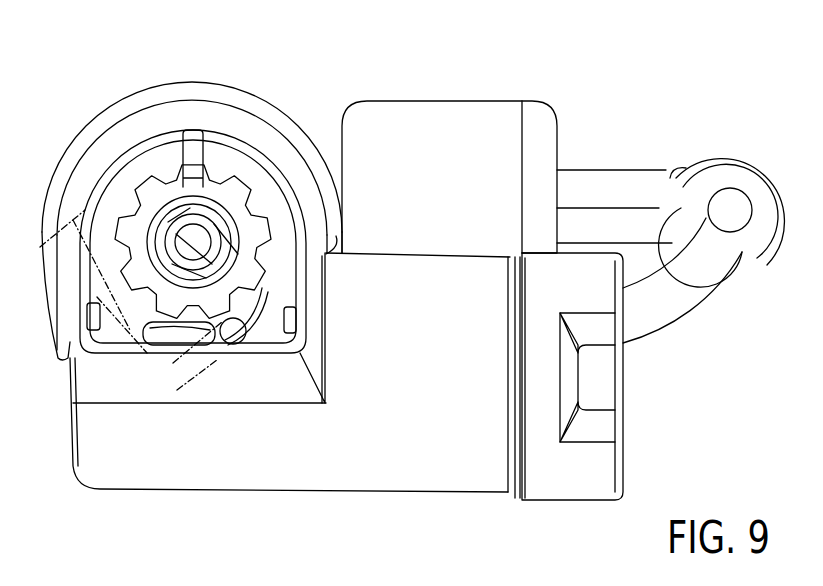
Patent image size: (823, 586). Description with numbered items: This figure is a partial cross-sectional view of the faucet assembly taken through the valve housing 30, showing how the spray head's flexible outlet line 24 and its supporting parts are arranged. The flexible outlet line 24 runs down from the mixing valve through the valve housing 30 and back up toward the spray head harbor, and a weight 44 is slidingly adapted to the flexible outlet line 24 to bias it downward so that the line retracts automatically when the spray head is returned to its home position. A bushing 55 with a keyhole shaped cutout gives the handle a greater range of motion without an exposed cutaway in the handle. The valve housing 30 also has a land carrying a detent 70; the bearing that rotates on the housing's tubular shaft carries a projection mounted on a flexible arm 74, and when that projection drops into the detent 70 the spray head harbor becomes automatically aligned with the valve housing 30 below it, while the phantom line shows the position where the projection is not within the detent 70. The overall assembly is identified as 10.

The hose reel assembly 10 is at (233, 72).
The flexible outlet line 24 is at (178, 228).
The valve housing 30 is at (452, 500).
The weight 44 is at (462, 108).
The bushing 55 is at (226, 182).
The detent 70 is at (217, 333).
The flexible arm 74 is at (257, 323).